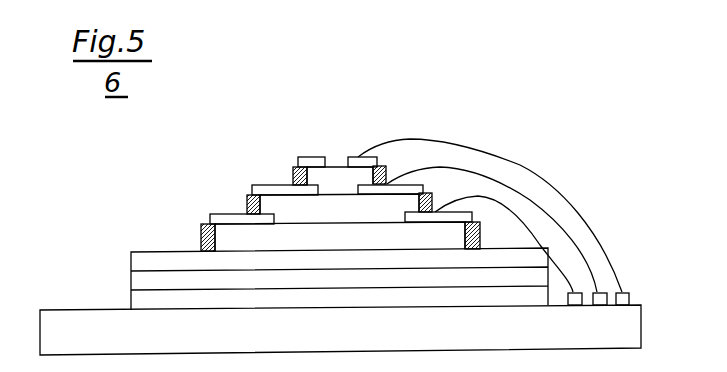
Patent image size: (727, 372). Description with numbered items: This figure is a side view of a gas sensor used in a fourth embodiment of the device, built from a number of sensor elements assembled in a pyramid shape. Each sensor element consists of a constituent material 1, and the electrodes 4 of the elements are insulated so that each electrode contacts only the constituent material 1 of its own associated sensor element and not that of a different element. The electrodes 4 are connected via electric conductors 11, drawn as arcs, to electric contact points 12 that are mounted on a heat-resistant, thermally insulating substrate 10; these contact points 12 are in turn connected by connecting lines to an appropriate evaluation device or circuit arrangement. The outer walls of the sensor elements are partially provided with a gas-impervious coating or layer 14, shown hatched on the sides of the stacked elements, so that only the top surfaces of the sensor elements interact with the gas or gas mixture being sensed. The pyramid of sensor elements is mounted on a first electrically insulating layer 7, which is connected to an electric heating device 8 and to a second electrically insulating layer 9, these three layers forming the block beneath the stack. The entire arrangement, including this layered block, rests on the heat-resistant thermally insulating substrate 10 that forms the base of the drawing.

The constituent material 1 is at (348, 182).
The electrodes 4 is at (323, 162).
The first electrically insulating layer 7 is at (140, 267).
The electric heating device 8 is at (140, 285).
The second electrically insulating layer 9 is at (140, 303).
The heat-resistant thermally insulating substrate 10 is at (60, 323).
The electric conductors 11 is at (522, 217).
The electric contact points 12 is at (621, 300).
The gas-impervious coating or layer 14 is at (204, 228).